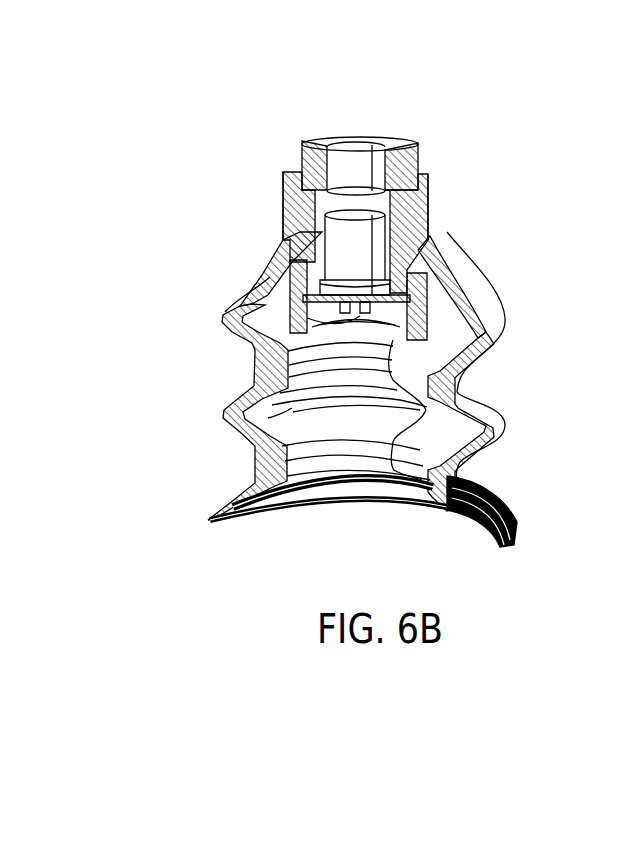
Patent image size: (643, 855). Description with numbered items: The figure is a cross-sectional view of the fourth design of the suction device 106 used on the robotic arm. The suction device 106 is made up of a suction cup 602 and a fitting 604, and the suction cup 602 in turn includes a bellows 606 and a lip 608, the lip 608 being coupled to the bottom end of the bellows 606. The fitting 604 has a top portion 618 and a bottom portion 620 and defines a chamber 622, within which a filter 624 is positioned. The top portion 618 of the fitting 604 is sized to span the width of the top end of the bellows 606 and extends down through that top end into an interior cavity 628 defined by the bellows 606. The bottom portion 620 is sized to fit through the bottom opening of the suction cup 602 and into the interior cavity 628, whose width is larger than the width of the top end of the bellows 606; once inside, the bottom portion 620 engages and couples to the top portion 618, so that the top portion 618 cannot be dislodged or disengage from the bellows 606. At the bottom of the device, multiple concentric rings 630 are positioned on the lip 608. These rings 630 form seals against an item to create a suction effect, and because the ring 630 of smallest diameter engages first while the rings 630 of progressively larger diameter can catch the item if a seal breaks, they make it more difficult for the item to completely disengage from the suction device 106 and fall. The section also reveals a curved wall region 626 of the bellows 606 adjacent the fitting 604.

The suction device 106 is at (327, 87).
The suction cup 602 is at (142, 220).
The fitting 604 is at (428, 176).
The bellows 606 is at (503, 323).
The lip 608 is at (523, 532).
The top portion 618 is at (432, 206).
The bottom portion 620 is at (298, 292).
The chamber 622 is at (330, 247).
The filter 624 is at (430, 257).
The curved section 626 is at (457, 296).
The interior cavity 628 is at (292, 422).
The concentric rings 630 is at (292, 507).